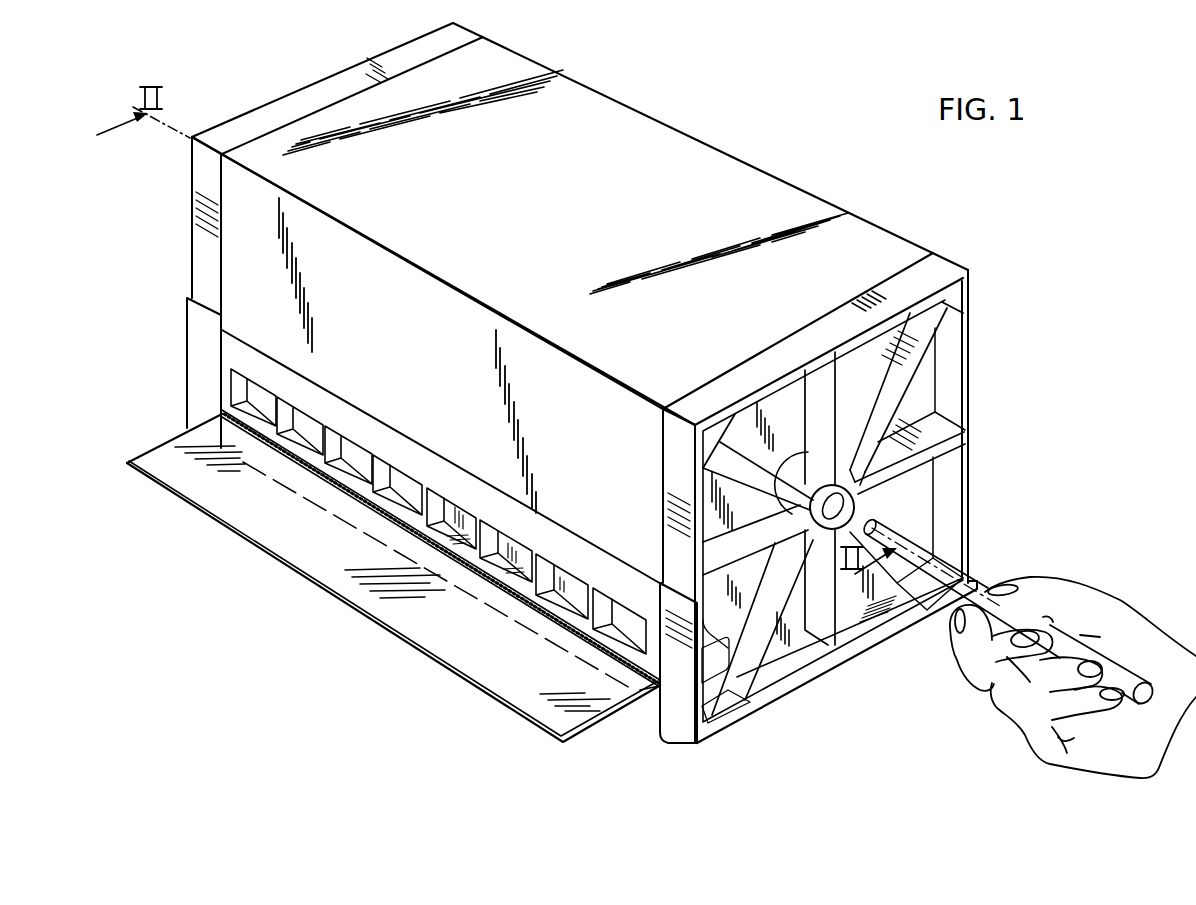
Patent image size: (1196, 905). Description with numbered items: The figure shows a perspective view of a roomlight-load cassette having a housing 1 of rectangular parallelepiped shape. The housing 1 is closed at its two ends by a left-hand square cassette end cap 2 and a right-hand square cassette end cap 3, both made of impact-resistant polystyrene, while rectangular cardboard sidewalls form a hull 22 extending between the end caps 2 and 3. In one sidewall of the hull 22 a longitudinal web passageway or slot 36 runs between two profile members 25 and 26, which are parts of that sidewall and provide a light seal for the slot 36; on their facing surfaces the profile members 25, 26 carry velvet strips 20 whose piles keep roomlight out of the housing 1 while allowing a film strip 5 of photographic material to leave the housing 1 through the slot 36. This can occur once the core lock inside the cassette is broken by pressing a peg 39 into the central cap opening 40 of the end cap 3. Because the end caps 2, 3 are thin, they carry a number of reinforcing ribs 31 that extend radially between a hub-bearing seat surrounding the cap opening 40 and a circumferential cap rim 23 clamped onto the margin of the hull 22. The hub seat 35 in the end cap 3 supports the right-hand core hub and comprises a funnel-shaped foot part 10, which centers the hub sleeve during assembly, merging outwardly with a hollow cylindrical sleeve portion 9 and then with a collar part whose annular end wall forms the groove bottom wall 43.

The housing 1 is at (720, 134).
The left-hand square cassette end cap 2 is at (296, 110).
The right-hand square cassette end cap 3 is at (964, 262).
The film strip 5 is at (408, 610).
The hollow cylindrical sleeve portion 9 is at (800, 505).
The funnel-shaped foot part 10 is at (797, 470).
The velvet strips 20 is at (525, 600).
The hull 22 is at (770, 192).
The circumferential cap rim 23 is at (202, 256).
The profile member 25 is at (648, 700).
The profile member 26 is at (593, 567).
The reinforcing ribs 31 is at (738, 445).
The hub seat 35 is at (872, 503).
The slot 36 is at (470, 565).
The peg 39 is at (982, 584).
The central cap opening 40 is at (858, 479).
The groove bottom wall 43 is at (826, 540).